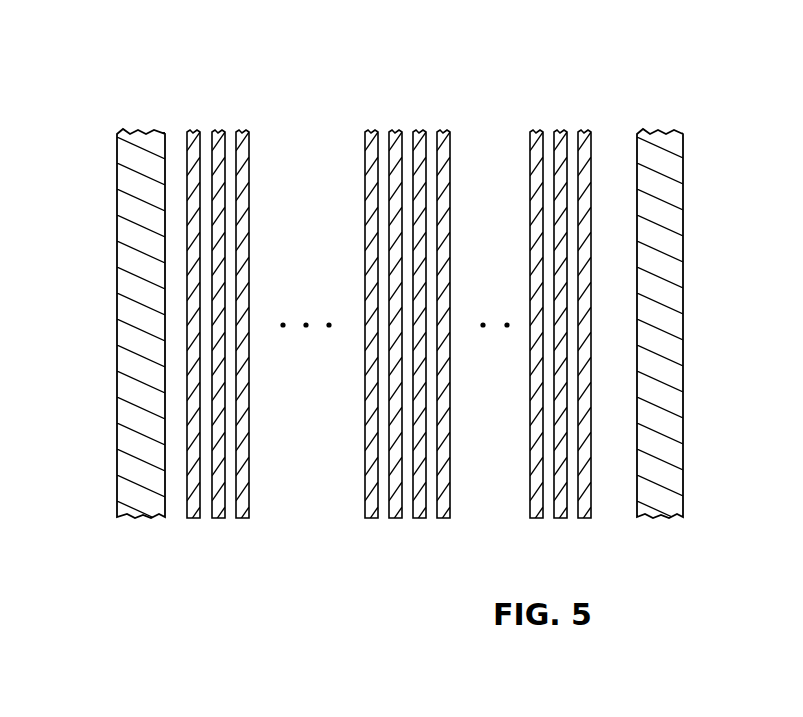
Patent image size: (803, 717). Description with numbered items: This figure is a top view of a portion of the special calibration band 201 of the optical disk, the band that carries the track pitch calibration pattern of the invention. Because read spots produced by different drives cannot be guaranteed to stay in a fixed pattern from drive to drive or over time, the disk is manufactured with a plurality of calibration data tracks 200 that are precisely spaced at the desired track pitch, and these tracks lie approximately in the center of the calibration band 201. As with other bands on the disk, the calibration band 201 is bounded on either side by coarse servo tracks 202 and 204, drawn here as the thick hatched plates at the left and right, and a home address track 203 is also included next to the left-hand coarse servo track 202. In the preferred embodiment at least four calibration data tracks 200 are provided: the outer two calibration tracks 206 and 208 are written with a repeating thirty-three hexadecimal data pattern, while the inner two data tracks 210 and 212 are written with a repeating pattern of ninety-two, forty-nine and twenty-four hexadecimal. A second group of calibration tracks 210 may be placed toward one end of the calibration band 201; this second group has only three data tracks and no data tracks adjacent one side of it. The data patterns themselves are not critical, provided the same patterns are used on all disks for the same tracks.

The calibration data tracks 200 is at (407, 282).
The calibration band 201 is at (382, 334).
The coarse servo track 202 is at (117, 402).
The home address track 203 is at (193, 520).
The coarse servo track 204 is at (683, 452).
The outer calibration track 206 is at (370, 425).
The outer calibration track 208 is at (443, 422).
The inner calibration track / second group of calibration tracks 210 is at (525, 130).
The inner calibration track 212 is at (420, 282).